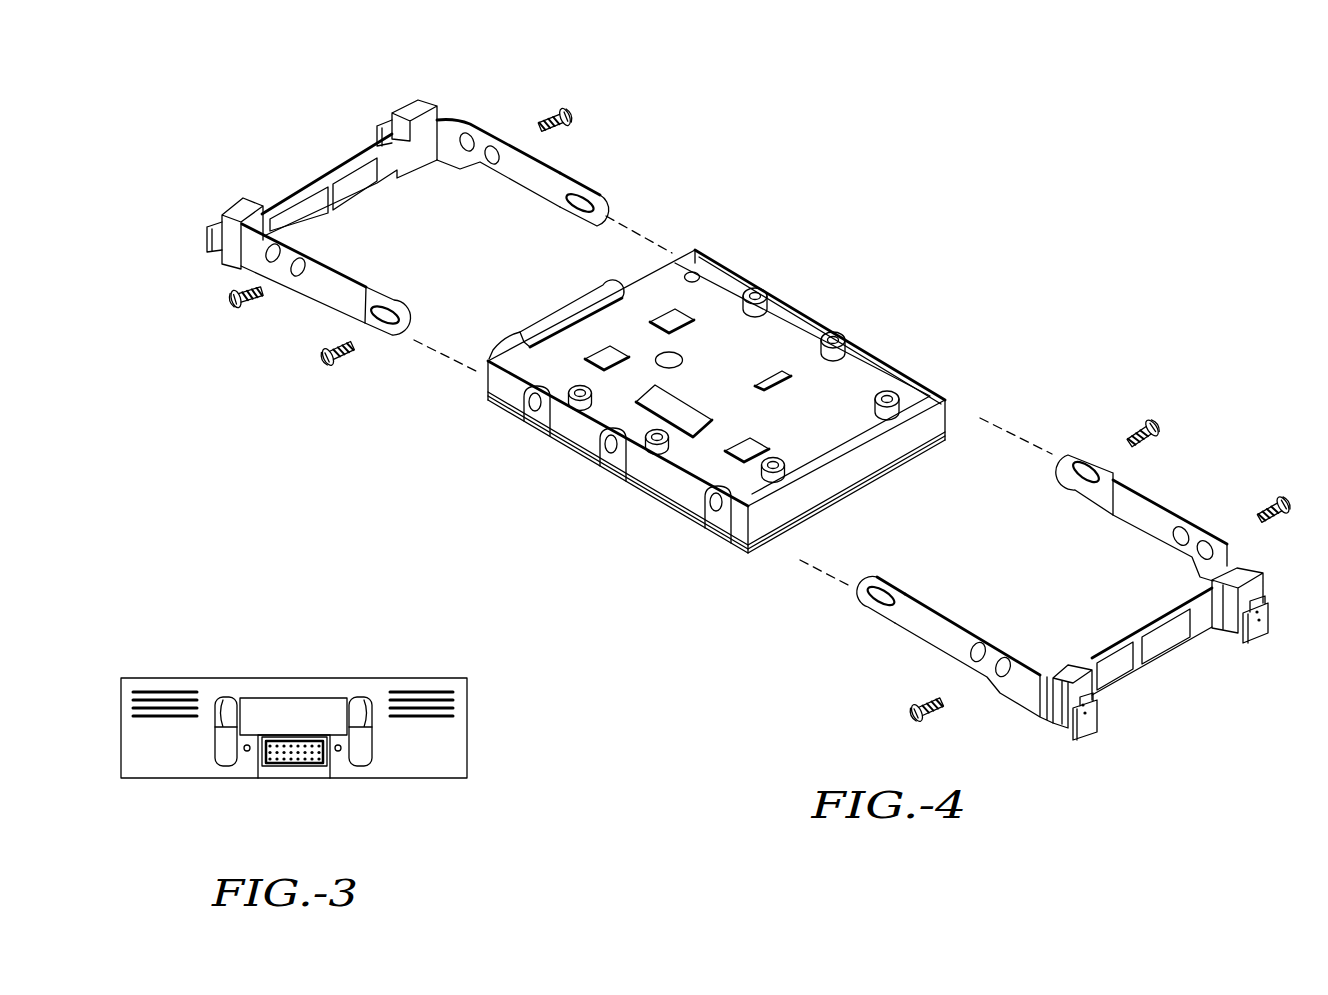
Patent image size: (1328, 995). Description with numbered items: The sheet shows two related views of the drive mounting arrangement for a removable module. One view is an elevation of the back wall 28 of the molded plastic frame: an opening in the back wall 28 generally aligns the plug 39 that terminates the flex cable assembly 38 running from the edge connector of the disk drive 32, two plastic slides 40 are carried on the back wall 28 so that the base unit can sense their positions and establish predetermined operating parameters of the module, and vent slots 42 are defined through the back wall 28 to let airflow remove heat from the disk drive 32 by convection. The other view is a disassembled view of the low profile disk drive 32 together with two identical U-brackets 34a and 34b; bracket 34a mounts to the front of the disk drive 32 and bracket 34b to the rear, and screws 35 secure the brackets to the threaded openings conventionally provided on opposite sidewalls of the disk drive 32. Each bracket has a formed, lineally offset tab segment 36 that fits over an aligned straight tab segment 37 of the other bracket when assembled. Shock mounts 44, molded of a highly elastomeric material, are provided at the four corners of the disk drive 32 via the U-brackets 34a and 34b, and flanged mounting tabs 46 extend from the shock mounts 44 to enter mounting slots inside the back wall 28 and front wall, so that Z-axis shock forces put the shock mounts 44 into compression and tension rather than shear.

In FIG. 3, the back wall 28 is at (276, 686).
In FIG. 3, the plug 39 is at (313, 770).
In FIG. 3, the plastic slides 40 is at (230, 699).
In FIG. 3, the vent slots 42 is at (155, 695).
In FIG. 4, the disk drive 32 is at (530, 466).
In FIG. 4, the U-bracket 34a is at (1174, 674).
In FIG. 4, the U-bracket 34b is at (322, 303).
In FIG. 4, the screws 35 is at (599, 87).
In FIG. 4, the lineally offset tab segment 36 is at (382, 294).
In FIG. 4, the straight tab segment 37 is at (577, 182).
In FIG. 4, the flex cable assembly 38 is at (562, 315).
In FIG. 4, the shock mounts 44 is at (418, 107).
In FIG. 4, the flanged mounting tabs 46 is at (376, 135).